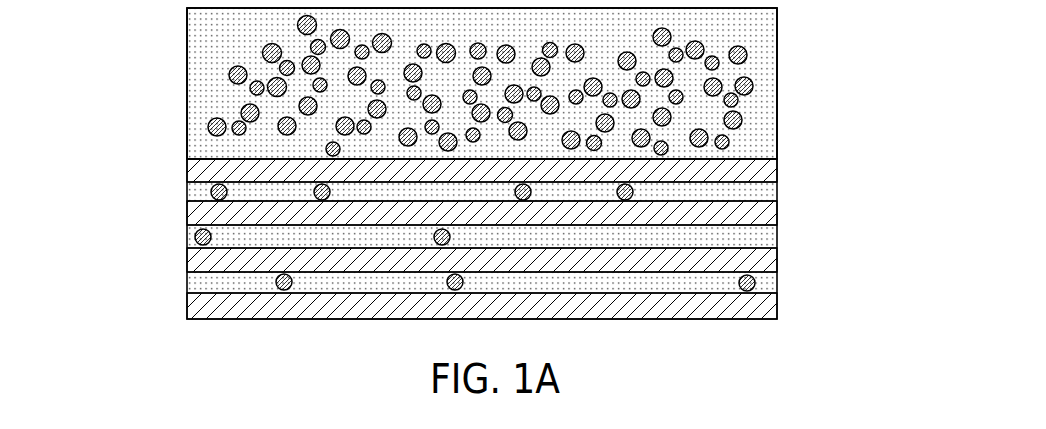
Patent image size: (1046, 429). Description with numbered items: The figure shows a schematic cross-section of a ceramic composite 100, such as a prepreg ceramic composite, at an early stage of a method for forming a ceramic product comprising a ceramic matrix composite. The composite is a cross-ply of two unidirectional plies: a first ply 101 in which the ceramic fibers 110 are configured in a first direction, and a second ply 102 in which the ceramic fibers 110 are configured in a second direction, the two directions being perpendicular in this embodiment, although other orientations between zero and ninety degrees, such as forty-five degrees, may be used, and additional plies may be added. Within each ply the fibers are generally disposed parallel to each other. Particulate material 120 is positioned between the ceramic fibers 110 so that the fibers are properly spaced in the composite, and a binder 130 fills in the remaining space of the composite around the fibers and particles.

The ceramic composite 100 is at (142, 46).
The first ply 101 is at (847, 160).
The second ply 102 is at (847, 8).
The ceramic fibers 110 is at (180, 130).
The particulate material 120 is at (229, 108).
The binder 130 is at (760, 128).